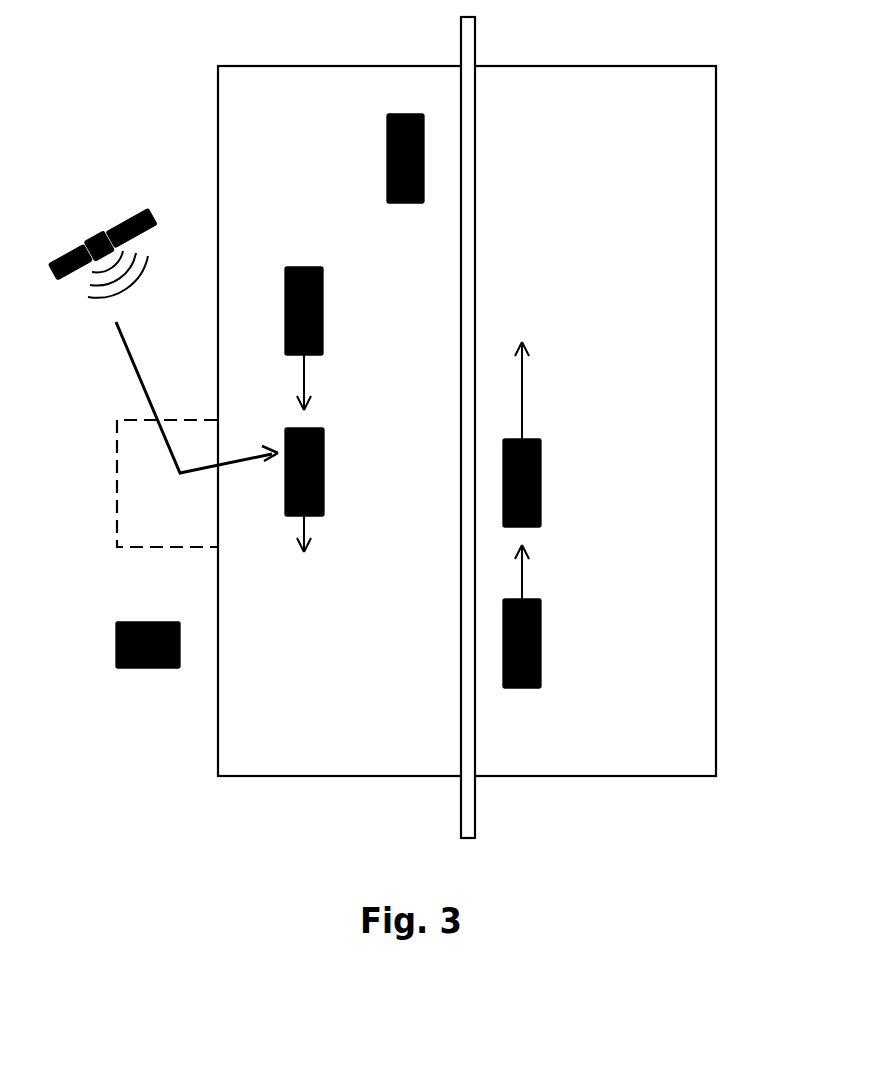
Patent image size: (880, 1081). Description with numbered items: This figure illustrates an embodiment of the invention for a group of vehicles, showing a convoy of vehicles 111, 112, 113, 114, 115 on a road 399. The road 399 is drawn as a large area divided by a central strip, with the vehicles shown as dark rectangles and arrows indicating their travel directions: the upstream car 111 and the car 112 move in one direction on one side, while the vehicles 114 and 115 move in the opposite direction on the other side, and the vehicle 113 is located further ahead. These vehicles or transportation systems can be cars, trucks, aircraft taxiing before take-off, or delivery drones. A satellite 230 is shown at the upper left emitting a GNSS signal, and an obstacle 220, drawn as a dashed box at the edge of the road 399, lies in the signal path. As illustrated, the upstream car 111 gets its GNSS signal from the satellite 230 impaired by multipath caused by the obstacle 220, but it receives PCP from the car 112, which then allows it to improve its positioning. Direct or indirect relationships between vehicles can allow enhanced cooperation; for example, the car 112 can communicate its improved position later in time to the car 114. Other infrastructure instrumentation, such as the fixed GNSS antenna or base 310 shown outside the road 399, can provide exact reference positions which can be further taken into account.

The upstream car 111 is at (324, 484).
The car 112 is at (323, 327).
The vehicle 113 is at (387, 184).
The car 114 is at (541, 617).
The vehicle 115 is at (541, 492).
The obstacle 220 is at (183, 548).
The satellite 230 is at (153, 222).
The fixed GNSS antenna or base 310 is at (140, 668).
The road 399 is at (560, 65).